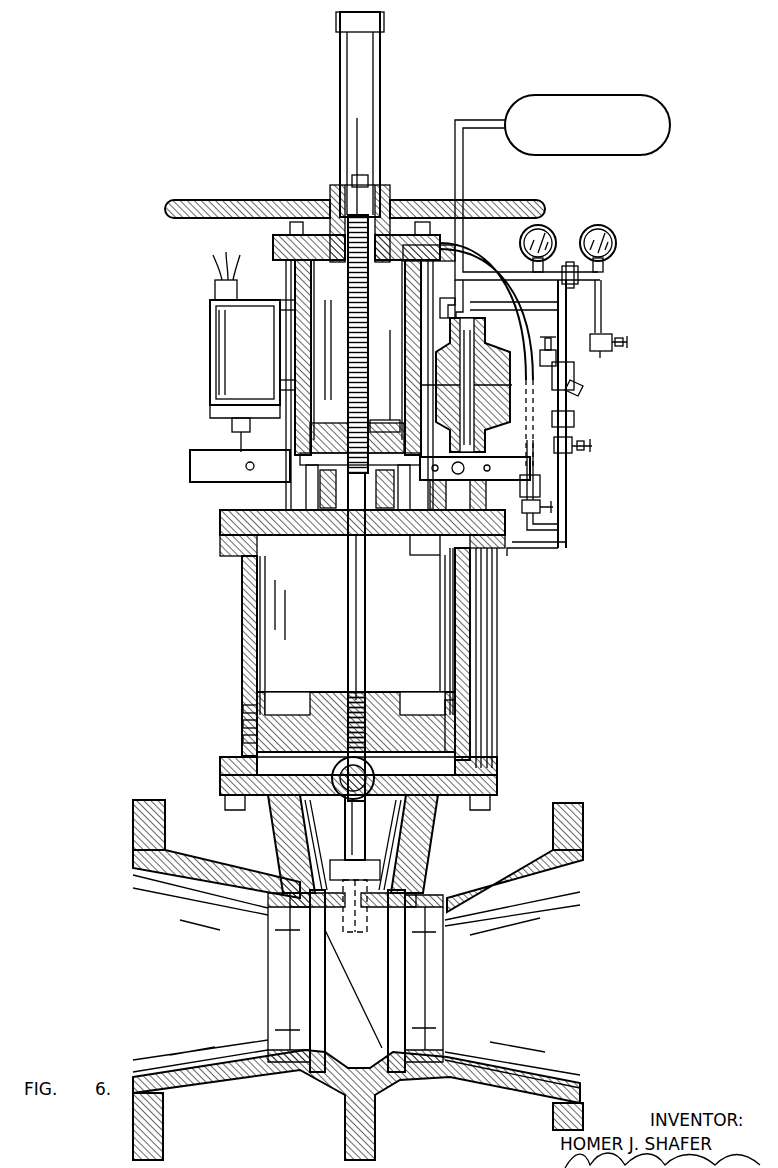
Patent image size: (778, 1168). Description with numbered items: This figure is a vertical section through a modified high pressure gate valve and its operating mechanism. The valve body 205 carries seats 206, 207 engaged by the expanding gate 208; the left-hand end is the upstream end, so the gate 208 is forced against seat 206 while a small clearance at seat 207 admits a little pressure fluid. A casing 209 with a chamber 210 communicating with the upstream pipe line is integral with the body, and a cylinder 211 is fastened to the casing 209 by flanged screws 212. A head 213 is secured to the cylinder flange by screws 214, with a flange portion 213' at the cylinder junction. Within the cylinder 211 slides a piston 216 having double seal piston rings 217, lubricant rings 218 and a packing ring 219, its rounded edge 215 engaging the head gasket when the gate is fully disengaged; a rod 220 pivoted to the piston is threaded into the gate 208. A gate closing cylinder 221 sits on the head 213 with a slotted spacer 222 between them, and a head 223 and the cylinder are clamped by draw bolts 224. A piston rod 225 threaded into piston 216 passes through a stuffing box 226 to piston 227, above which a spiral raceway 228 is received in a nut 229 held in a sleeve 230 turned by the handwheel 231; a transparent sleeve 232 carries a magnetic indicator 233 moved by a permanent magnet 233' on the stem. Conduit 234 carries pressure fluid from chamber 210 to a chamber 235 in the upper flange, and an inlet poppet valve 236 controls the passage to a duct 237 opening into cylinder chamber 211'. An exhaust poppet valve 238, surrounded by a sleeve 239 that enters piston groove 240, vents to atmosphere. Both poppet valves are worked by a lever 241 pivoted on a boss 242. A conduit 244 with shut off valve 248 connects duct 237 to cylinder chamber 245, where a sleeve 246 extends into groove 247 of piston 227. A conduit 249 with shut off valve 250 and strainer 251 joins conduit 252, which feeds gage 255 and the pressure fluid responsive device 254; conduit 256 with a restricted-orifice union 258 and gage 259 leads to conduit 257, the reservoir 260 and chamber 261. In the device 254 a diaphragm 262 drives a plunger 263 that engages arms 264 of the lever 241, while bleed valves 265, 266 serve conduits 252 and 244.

The valve body 205 is at (226, 1092).
The valve seat 206 is at (432, 993).
The valve seat 207 is at (300, 990).
The expanding valve gate 208 is at (367, 885).
The casing 209 is at (275, 852).
The chamber 210 is at (436, 837).
The cylinder 211 is at (332, 654).
The cylinder chamber 211' is at (231, 635).
The screws 212 is at (230, 812).
The head 213 is at (335, 528).
The cylinder head flange 213' is at (212, 552).
The screws 214 is at (290, 485).
The rounded edge of piston 215 is at (248, 688).
The piston 216 is at (302, 713).
The double seal piston rings 217 is at (465, 698).
The lubricant rings 218 is at (244, 714).
The packing or sealing ring 219 is at (244, 727).
The rod 220 is at (358, 800).
The gate closing cylinder 221 is at (296, 345).
The slotted spacer 222 is at (300, 481).
The head 223 is at (275, 247).
The draw bolts 224 is at (421, 218).
The piston rod 225 is at (366, 657).
The stuffing box 226 is at (422, 545).
The piston 227 is at (335, 440).
The spiral anti-friction bearing raceway 228 is at (352, 325).
The nut 229 is at (320, 220).
The sleeve 230 is at (346, 262).
The handwheel 231 is at (172, 206).
The sleeve 232 is at (380, 82).
The magnetic indicator 233 is at (389, 156).
The permanent magnet 233' is at (324, 166).
The conduit 234 is at (492, 670).
The chamber 235 is at (503, 557).
The inlet poppet valve 236 is at (548, 530).
The duct 237 is at (450, 566).
The exhaust poppet valve 238 is at (398, 583).
The sleeve 239 is at (392, 582).
The piston groove 240 is at (417, 705).
The lever 241 is at (532, 484).
The boss 242 is at (472, 482).
The conduit 244 is at (515, 328).
The cylinder chamber 245 is at (292, 376).
The sleeve 246 is at (402, 268).
The groove 247 is at (385, 425).
The shut off valve 248 is at (542, 507).
The conduit 249 is at (568, 478).
The shut off valve 250 is at (593, 447).
The strainer 251 is at (574, 378).
The conduit 252 is at (572, 305).
The pressure fluid responsive device 254 is at (462, 318).
The gage 255 is at (616, 243).
The conduit 256 is at (553, 272).
The conduit 257 is at (464, 176).
The union 258 is at (578, 284).
The gage 259 is at (520, 242).
The reservoir 260 is at (630, 155).
The chamber 261 is at (416, 352).
The diaphragm 262 is at (444, 318).
The plunger 263 is at (472, 360).
The arms 264 is at (562, 404).
The bleed valve 265 is at (614, 338).
The bleed valve 266 is at (576, 368).